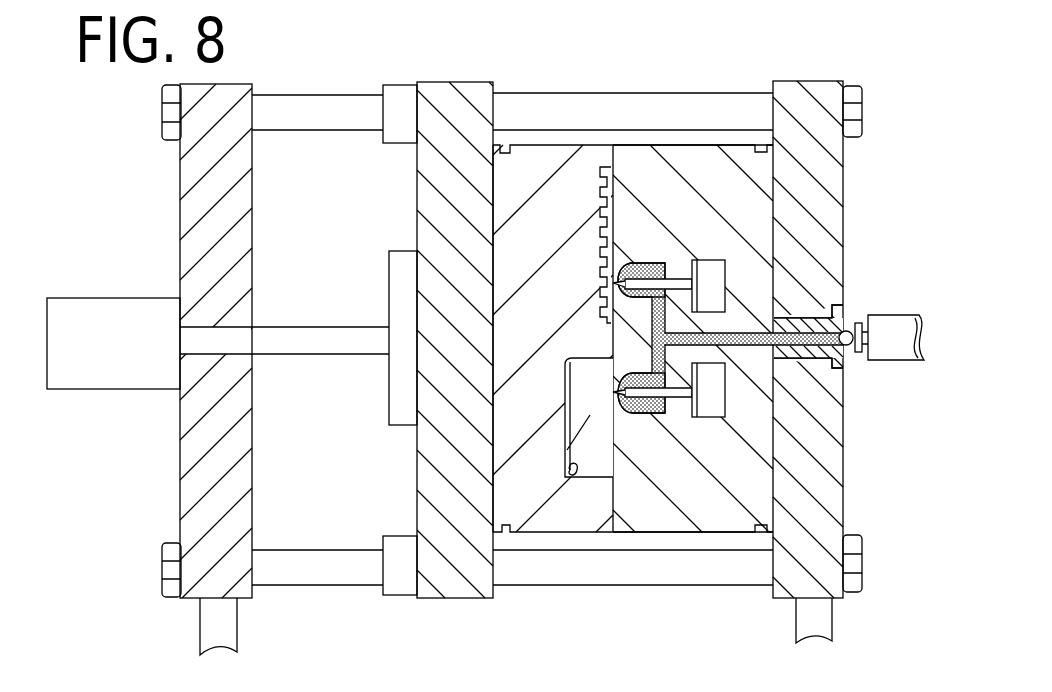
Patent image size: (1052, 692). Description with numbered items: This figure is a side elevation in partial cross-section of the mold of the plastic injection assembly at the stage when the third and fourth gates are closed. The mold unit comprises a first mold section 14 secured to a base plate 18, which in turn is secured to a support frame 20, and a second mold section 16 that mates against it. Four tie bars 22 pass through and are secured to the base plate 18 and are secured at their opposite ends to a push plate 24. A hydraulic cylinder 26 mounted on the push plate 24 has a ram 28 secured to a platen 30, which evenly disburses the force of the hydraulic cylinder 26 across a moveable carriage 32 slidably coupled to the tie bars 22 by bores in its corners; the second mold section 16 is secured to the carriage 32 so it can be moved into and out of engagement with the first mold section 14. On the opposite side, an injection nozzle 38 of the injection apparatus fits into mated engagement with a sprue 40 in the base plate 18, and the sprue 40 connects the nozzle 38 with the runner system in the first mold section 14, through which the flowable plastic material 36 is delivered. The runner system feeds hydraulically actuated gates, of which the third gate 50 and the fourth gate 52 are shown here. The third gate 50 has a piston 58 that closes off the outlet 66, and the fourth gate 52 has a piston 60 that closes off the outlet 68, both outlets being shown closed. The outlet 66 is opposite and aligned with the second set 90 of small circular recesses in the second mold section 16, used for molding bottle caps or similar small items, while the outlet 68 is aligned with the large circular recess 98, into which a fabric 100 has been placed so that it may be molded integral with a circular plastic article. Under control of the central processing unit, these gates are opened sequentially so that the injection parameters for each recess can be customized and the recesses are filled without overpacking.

The first mold section 14 is at (673, 158).
The second mold section 16 is at (535, 160).
The base plate 18 is at (810, 92).
The support frame 20 is at (818, 624).
The tie bars 22 is at (333, 107).
The push plate 24 is at (227, 97).
The hydraulic cylinder 26 is at (89, 377).
The ram 28 is at (322, 340).
The platen 30 is at (400, 278).
The moveable carriage 32 is at (470, 95).
The flowable plastic material 36 is at (808, 333).
The injection nozzle 38 is at (890, 335).
The sprue 40 is at (825, 345).
The third gate 50 is at (718, 260).
The fourth gate 52 is at (718, 397).
The piston 58 is at (678, 283).
The piston 60 is at (677, 393).
The outlet 66 is at (613, 283).
The outlet 68 is at (613, 393).
The second set of small circular recesses 90 is at (600, 172).
The large circular recess 98 is at (565, 447).
The fabric 100 is at (572, 470).